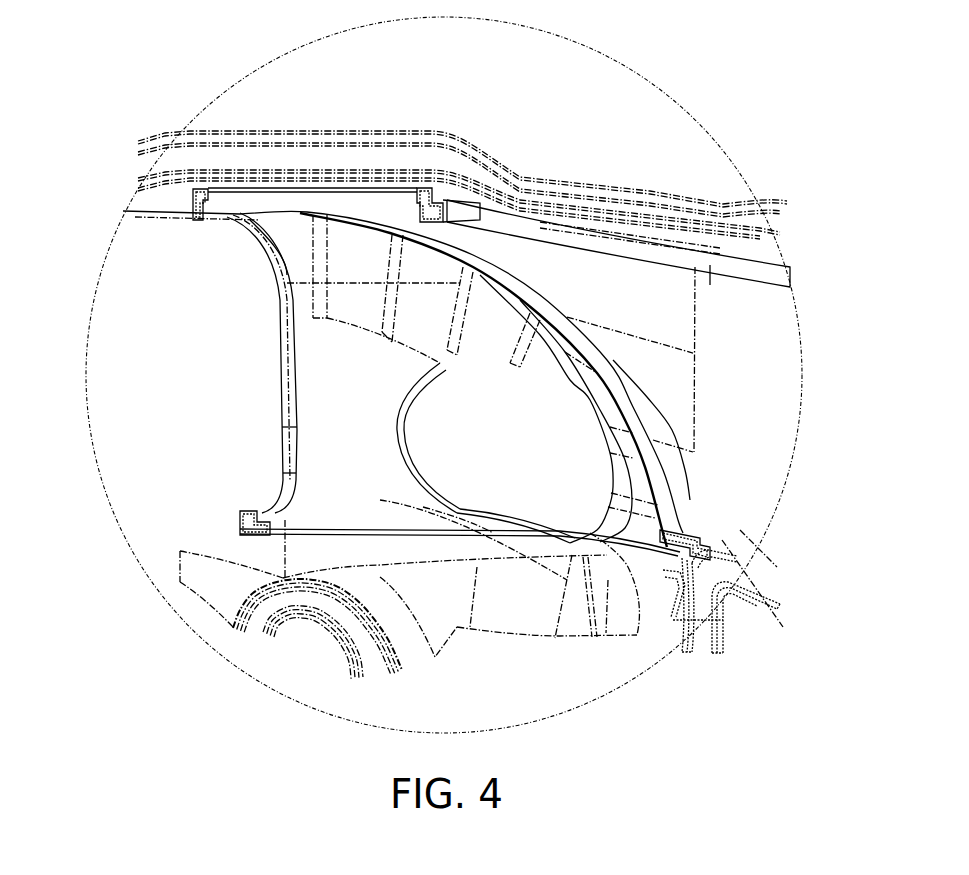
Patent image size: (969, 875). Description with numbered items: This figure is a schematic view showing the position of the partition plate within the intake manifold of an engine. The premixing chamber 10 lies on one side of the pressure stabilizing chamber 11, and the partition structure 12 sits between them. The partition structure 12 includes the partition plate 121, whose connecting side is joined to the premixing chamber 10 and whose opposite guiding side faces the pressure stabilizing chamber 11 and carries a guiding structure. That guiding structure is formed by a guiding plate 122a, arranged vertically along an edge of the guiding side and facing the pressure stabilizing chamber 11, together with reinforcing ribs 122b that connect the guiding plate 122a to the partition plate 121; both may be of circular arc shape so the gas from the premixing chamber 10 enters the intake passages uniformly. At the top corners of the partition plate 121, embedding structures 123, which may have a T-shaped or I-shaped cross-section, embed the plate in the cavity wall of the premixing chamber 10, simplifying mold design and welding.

The premixing chamber 10 is at (170, 410).
The pressure stabilizing chamber 11 is at (783, 382).
The partition structure 12 is at (270, 324).
The partition plate 121 is at (320, 415).
The guiding plate 122a is at (587, 362).
The reinforcing rib 122b is at (463, 282).
The embedding structure 123 is at (210, 220).